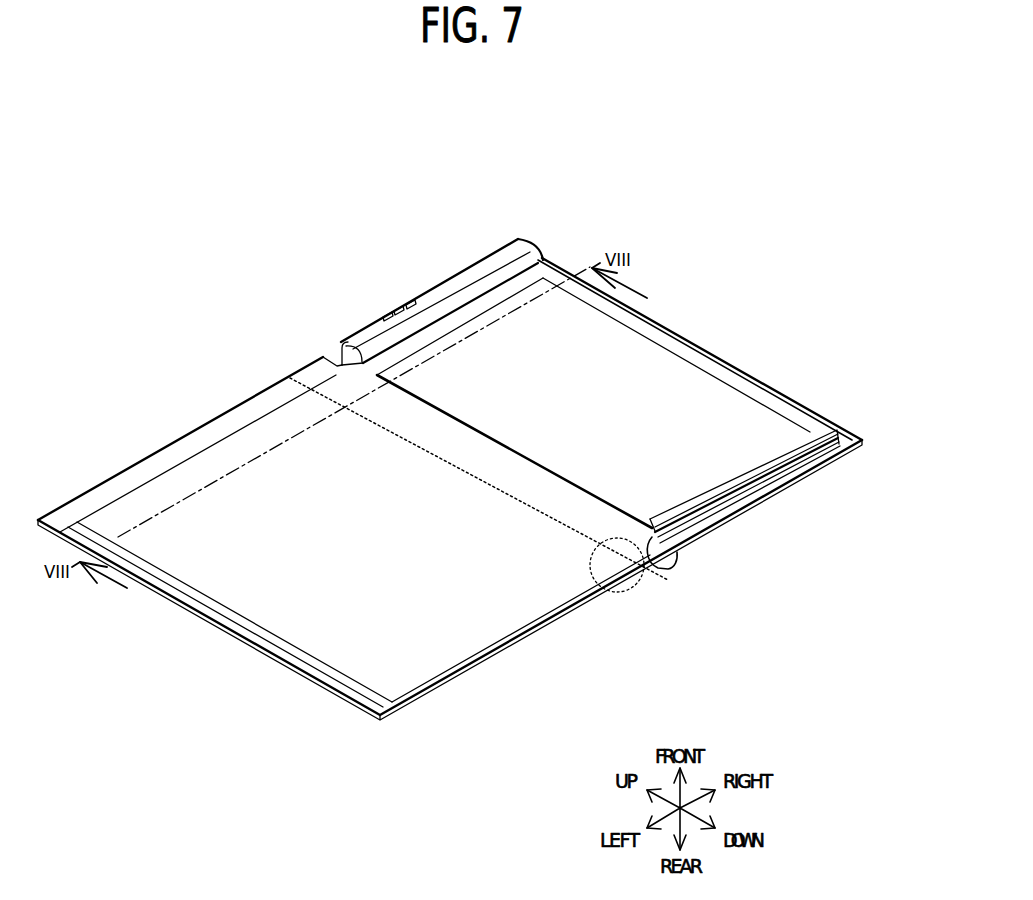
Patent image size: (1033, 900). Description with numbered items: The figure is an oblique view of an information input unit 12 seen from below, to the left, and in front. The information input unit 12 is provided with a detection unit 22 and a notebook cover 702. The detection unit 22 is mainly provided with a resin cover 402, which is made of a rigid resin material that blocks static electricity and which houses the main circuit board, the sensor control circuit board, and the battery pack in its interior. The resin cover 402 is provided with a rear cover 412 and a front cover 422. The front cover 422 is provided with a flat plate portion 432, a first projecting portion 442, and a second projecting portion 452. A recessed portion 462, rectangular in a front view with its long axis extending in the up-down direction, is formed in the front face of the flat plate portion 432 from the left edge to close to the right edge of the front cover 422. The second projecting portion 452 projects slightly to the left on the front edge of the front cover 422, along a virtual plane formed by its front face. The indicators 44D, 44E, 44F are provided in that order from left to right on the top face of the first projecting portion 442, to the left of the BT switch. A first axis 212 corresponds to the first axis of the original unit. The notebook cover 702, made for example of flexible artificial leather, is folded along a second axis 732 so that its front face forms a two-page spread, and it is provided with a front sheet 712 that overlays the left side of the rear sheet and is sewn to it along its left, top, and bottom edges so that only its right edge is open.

The information input unit 12 is at (685, 158).
The detection unit 22 is at (518, 236).
The first projecting portion 442 is at (532, 252).
The indicator 44D is at (388, 310).
The indicator 44E is at (401, 304).
The indicator 44F is at (416, 298).
The flat plate portion 432 is at (652, 328).
The recessed portion 462 is at (667, 395).
The resin cover 402 is at (812, 427).
The rear cover 412 is at (780, 476).
The front cover 422 is at (790, 450).
The second projecting portion 452 is at (665, 560).
The second axis 732 is at (630, 542).
The first axis 212 is at (625, 592).
The notebook cover 702 is at (474, 567).
The front sheet 712 is at (413, 607).